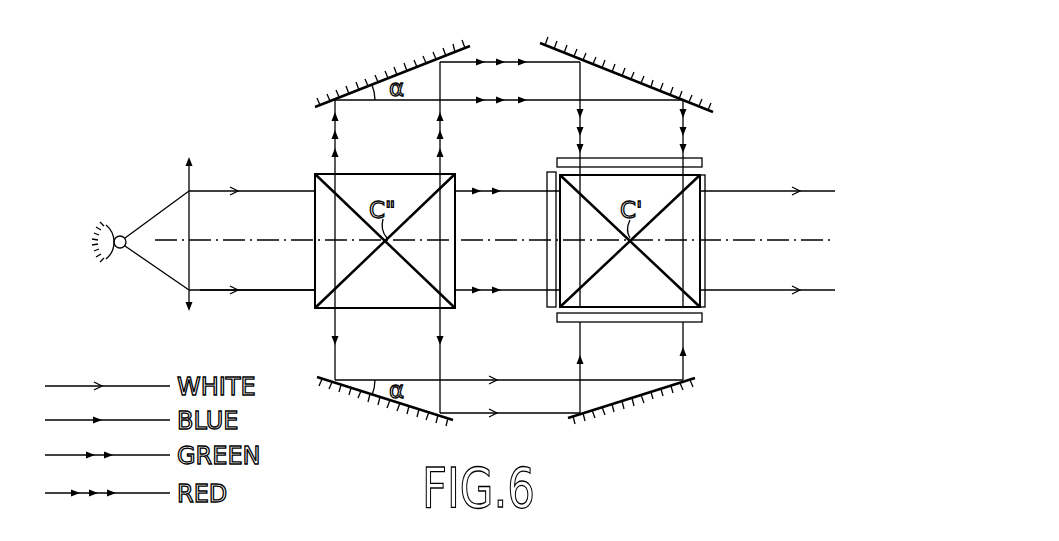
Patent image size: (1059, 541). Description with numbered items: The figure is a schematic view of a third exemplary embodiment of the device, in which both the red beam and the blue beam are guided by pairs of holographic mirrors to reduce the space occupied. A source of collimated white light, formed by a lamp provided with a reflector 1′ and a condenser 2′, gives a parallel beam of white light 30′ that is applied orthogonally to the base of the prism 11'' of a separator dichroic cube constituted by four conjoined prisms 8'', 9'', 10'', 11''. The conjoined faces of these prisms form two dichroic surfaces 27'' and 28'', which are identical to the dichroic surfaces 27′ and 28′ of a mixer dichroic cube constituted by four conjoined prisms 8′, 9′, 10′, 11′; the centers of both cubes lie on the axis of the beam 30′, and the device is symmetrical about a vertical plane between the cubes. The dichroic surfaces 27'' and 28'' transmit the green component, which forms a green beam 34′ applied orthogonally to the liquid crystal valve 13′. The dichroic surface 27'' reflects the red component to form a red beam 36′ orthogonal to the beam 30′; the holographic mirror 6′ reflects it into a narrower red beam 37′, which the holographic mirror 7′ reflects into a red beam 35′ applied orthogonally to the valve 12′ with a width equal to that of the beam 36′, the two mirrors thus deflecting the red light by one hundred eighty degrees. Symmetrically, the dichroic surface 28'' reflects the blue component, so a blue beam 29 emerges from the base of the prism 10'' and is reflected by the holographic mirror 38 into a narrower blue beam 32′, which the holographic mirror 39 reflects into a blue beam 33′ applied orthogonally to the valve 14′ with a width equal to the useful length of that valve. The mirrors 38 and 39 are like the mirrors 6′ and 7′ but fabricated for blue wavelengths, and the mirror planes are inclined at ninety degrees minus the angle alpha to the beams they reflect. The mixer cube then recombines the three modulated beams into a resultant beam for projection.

The lamp provided with a reflector 1′ is at (117, 290).
The condenser 2′ is at (190, 306).
The holographic mirror 6′ is at (378, 82).
The holographic mirror 7′ is at (620, 75).
The prism 8′ is at (613, 180).
The prism 8'' is at (385, 163).
The prism 9′ is at (570, 265).
The prism 9'' is at (466, 241).
The prism 10′ is at (620, 305).
The prism 10'' is at (385, 325).
The prism 11′ is at (700, 197).
The prism 11'' is at (365, 225).
The liquid crystal valve 12′ is at (639, 167).
The liquid crystal valve 13′ is at (546, 172).
The liquid crystal valve 14′ is at (655, 316).
The dichroic surface 27′ is at (582, 207).
The dichroic surface 27'' is at (408, 241).
The dichroic surface 28′ is at (566, 299).
The dichroic surface 28'' is at (385, 261).
The blue beam 29 is at (333, 358).
The beam of white light 30′ is at (257, 291).
The blue beam 32′ is at (520, 413).
The blue beam 33′ is at (578, 343).
The green beam 34′ is at (467, 188).
The red beam 35′ is at (687, 123).
The red beam 36′ is at (333, 123).
The red beam 37′ is at (533, 62).
The holographic mirror 38 is at (393, 405).
The holographic mirror 39 is at (620, 407).